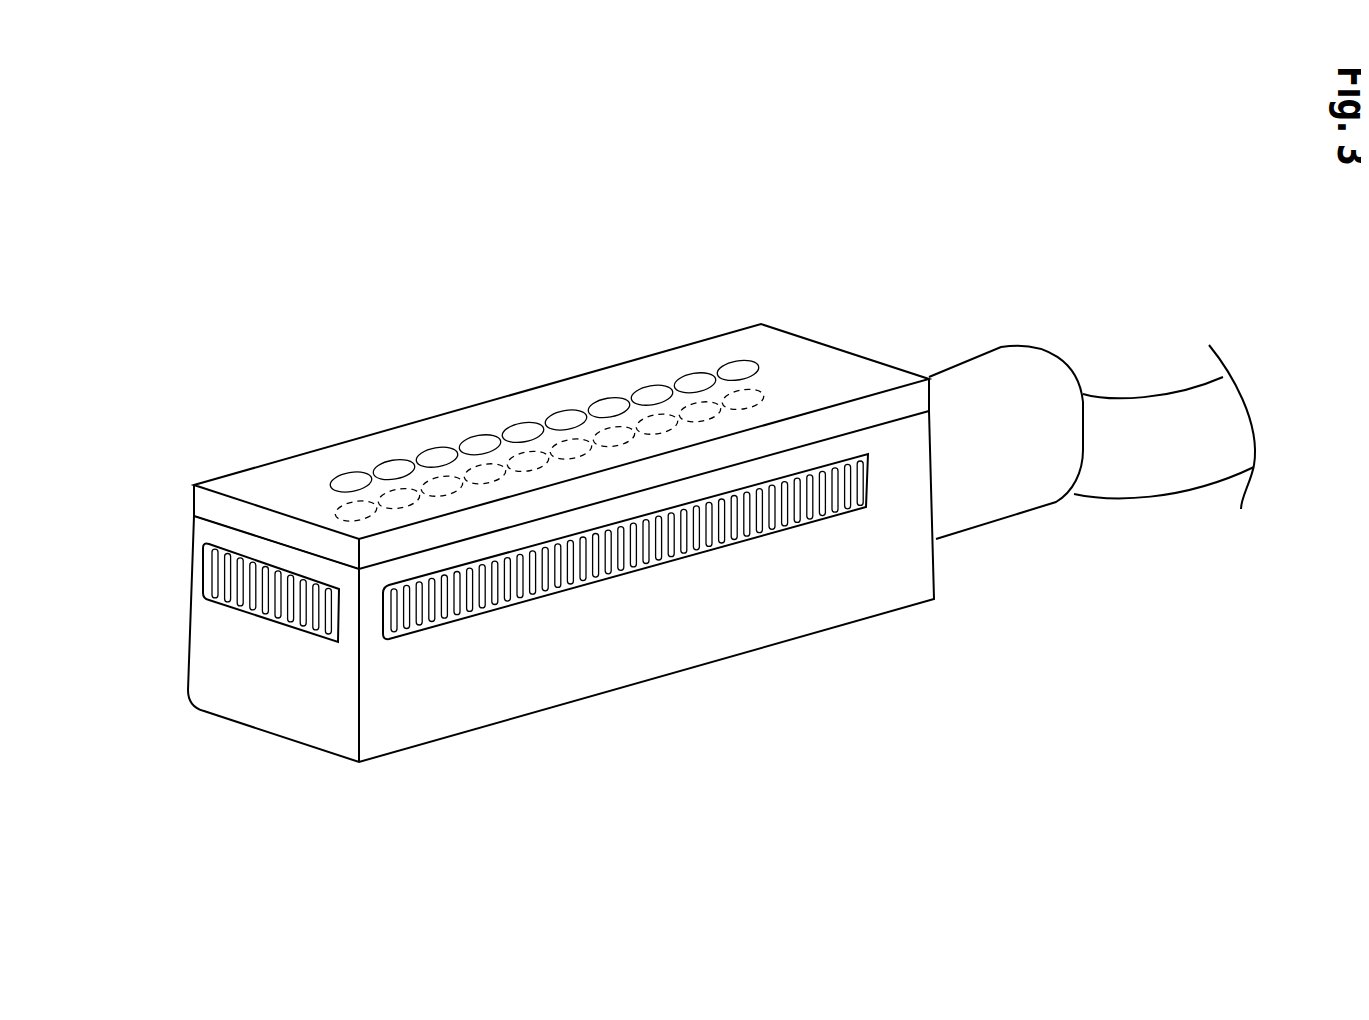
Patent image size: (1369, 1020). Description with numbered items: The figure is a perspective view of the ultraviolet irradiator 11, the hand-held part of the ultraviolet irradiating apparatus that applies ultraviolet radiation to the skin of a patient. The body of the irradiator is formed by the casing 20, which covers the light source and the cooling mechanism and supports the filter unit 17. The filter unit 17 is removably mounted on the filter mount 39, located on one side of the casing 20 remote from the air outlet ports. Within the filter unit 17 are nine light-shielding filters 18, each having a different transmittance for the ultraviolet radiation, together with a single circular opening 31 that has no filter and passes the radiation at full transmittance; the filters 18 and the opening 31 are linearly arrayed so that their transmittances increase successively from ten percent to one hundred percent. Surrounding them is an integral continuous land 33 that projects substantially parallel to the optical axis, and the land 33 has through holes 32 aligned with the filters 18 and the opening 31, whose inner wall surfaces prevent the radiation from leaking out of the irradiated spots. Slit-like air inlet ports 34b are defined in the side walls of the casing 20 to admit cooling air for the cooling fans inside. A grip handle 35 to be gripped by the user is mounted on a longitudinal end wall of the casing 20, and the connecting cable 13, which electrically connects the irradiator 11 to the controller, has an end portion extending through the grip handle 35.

The ultraviolet irradiator 11 is at (976, 838).
The connecting cable 13 is at (1147, 410).
The filter unit 17 is at (257, 473).
The light-shielding filters 18 is at (443, 480).
The casing 20 is at (233, 660).
The circular opening 31 is at (758, 378).
The through holes 32 is at (398, 465).
The land 33 is at (624, 388).
The air inlet ports 34b is at (675, 540).
The grip handle 35 is at (985, 378).
The filter mount 39 is at (225, 518).